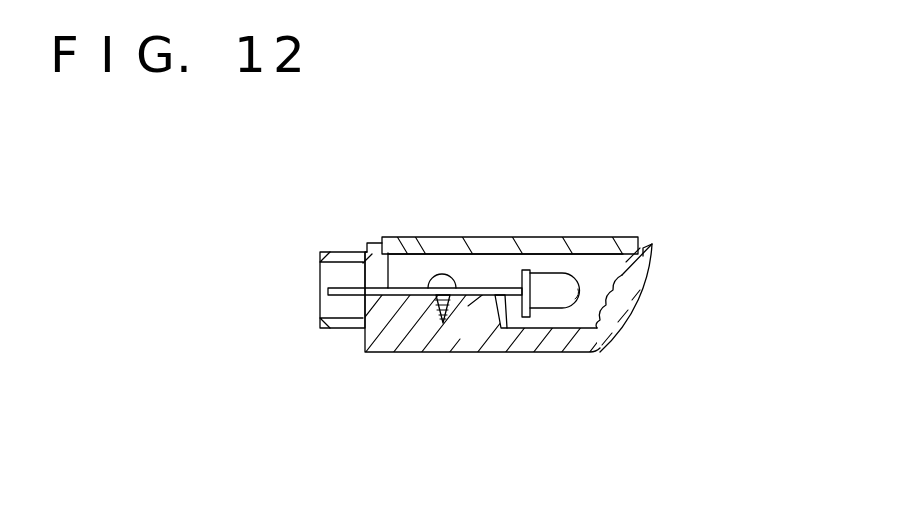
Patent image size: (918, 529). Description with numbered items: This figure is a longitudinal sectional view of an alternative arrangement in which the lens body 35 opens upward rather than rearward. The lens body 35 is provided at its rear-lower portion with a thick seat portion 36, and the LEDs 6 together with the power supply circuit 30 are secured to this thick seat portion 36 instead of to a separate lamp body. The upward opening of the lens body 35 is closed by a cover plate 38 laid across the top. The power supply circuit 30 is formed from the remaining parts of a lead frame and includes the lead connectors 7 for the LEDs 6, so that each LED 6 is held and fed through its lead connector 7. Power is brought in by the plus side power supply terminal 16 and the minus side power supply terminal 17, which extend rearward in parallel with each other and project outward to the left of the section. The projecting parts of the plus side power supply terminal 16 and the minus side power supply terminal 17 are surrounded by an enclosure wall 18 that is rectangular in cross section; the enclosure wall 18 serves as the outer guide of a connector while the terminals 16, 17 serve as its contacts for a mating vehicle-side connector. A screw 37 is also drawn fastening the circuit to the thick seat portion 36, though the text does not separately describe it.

The LED 6 is at (568, 295).
The lead connector 7 is at (505, 328).
The plus side power supply terminal 16 is at (354, 255).
The minus side power supply terminal 17 is at (328, 289).
The enclosure wall 18 is at (337, 252).
The power supply circuit 30 is at (483, 254).
The lens body 35 is at (627, 297).
The thick seat portion 36 is at (455, 340).
The screw 37 is at (440, 275).
The cover plate 38 is at (578, 252).